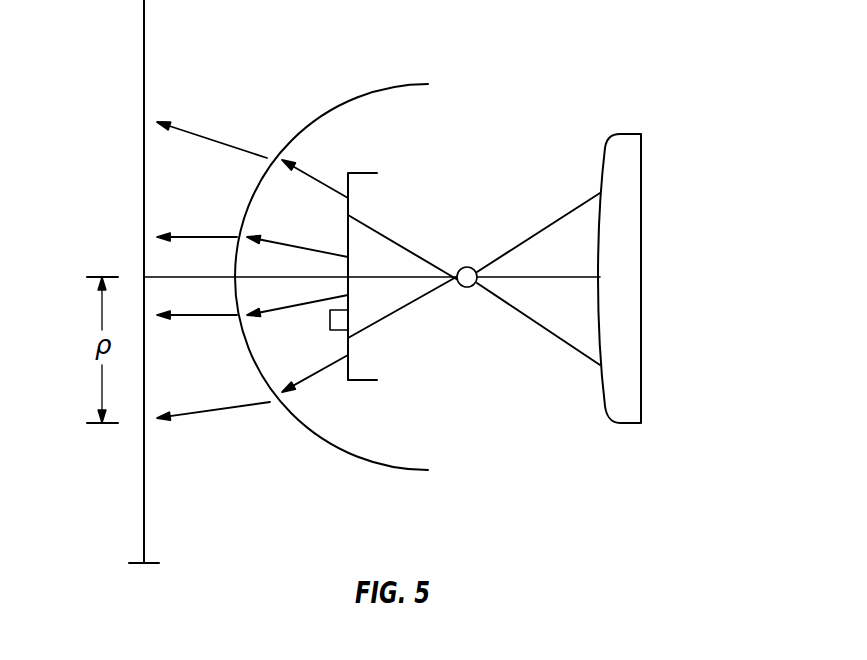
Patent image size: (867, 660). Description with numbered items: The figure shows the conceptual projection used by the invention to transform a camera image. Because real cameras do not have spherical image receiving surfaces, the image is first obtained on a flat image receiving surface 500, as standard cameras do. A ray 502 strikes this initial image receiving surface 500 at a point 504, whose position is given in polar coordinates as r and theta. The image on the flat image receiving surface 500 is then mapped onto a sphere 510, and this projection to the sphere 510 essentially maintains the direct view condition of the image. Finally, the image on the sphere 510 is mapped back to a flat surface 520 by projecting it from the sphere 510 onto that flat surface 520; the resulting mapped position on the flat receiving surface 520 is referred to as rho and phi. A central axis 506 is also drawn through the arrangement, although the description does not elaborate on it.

The flat image receiving surface 500 is at (473, 267).
The ray 502 is at (474, 276).
The point 504 is at (375, 276).
The optical axis 506 is at (372, 247).
The sphere 510 is at (304, 277).
The flat surface 520 is at (117, 281).